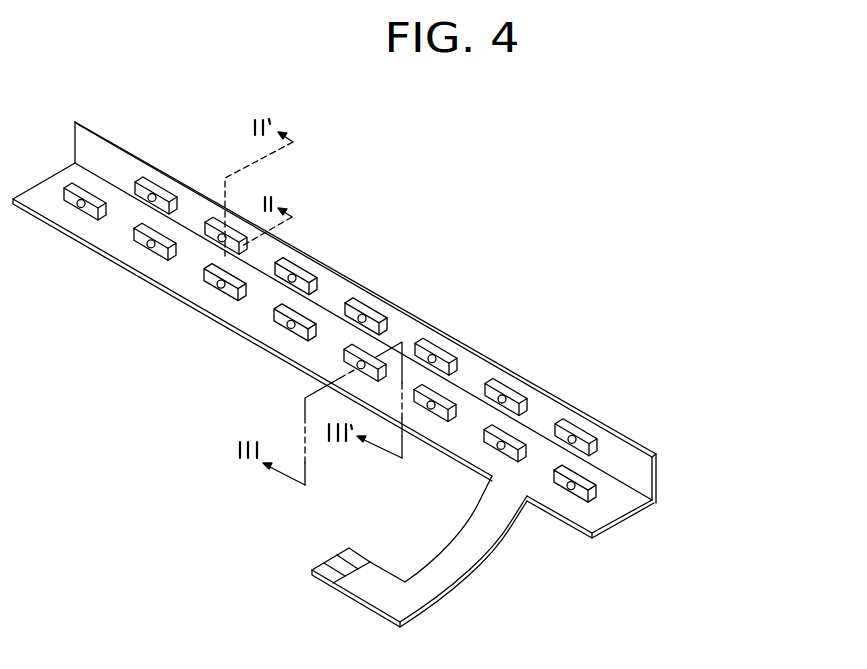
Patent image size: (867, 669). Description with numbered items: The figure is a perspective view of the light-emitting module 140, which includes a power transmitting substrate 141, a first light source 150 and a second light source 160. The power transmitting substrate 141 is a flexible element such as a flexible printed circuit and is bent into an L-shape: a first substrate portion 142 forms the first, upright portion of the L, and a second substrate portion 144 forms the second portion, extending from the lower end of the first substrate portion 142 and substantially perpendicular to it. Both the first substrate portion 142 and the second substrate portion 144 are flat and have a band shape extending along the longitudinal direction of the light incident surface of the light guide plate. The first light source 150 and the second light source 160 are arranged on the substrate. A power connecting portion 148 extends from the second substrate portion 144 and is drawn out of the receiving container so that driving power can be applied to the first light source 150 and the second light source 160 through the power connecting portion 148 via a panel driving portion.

The light-emitting module 140 is at (423, 374).
The power transmitting substrate 141 is at (394, 330).
The first substrate portion 142 is at (658, 477).
The second substrate portion 144 is at (650, 503).
The power connecting portion 148 is at (478, 555).
The first light source 150 is at (583, 436).
The second light source 160 is at (589, 506).